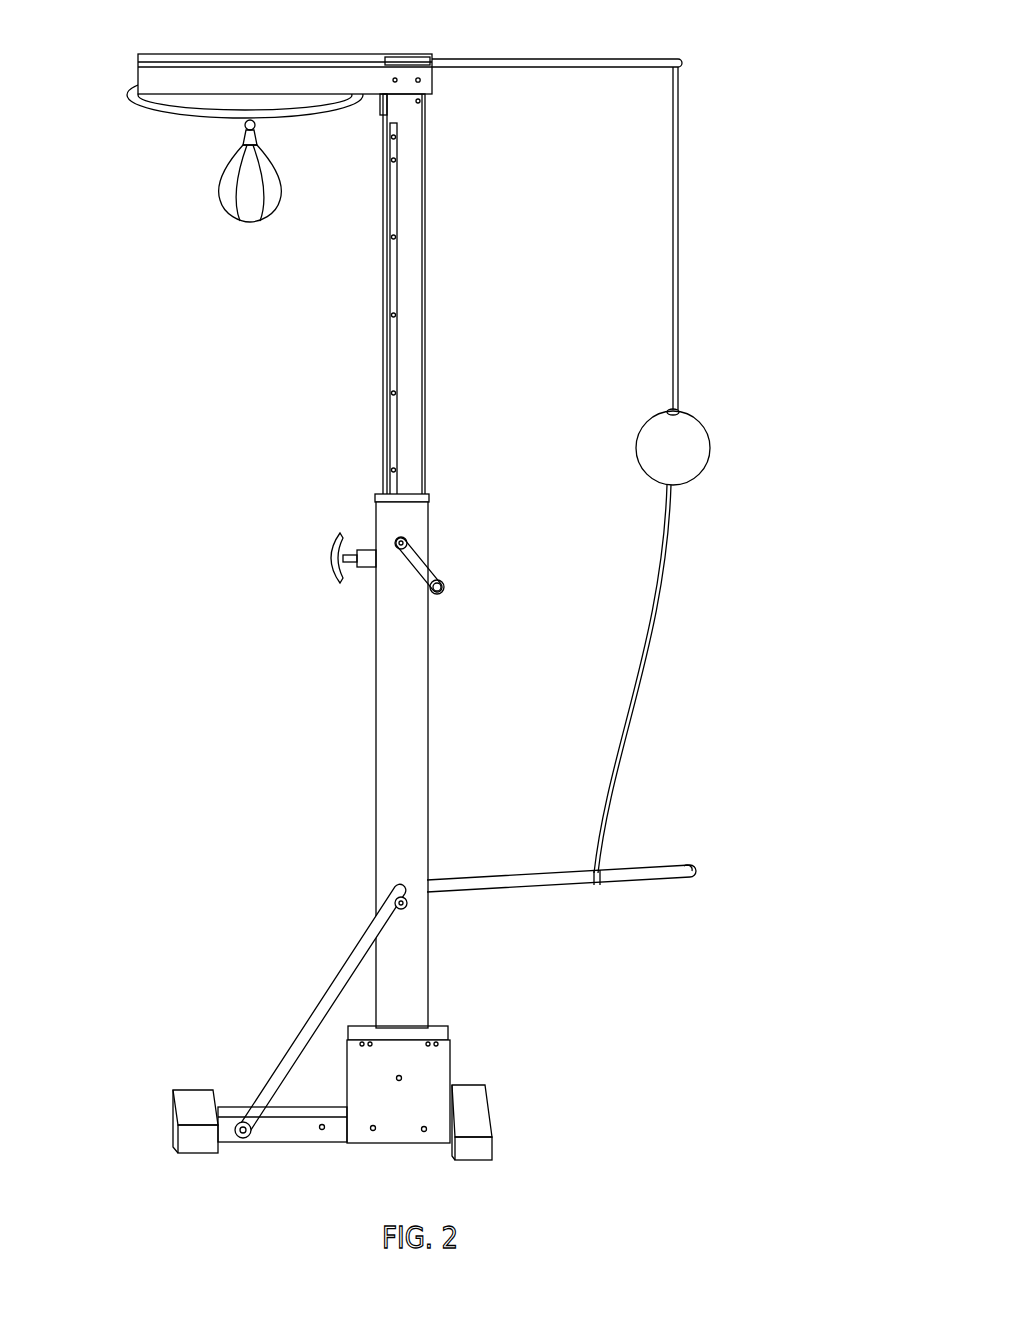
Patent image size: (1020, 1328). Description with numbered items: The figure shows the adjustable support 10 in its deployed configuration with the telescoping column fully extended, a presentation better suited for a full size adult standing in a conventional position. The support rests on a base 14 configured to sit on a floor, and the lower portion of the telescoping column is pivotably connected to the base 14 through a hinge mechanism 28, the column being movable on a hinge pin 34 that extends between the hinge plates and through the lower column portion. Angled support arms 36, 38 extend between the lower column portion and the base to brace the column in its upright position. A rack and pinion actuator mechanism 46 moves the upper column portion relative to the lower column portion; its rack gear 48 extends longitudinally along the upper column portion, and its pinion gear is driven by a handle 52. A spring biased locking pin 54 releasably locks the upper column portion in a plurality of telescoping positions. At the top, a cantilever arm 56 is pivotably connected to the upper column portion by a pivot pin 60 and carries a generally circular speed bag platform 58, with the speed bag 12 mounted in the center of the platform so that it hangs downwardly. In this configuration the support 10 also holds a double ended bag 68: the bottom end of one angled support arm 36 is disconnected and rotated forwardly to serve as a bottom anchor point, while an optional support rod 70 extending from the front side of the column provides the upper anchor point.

The adjustable support 10 is at (210, 423).
The speed bag 12 is at (225, 198).
The base 14 is at (173, 1126).
The hinge mechanism 28 is at (399, 1126).
The hinge pin 34 is at (483, 1108).
The angled support arm 36 is at (336, 995).
The angled support arm 38 is at (545, 876).
The rack and pinion actuator mechanism 46 is at (356, 656).
The rack gear 48 is at (396, 254).
The handle 52 is at (420, 560).
The spring biased locking pin 54 is at (366, 548).
The cantilever arm 56 is at (262, 78).
The speed bag platform 58 is at (140, 106).
The pivot pin 60 is at (417, 79).
The double ended bag 68 is at (703, 447).
The support rod 70 is at (570, 59).